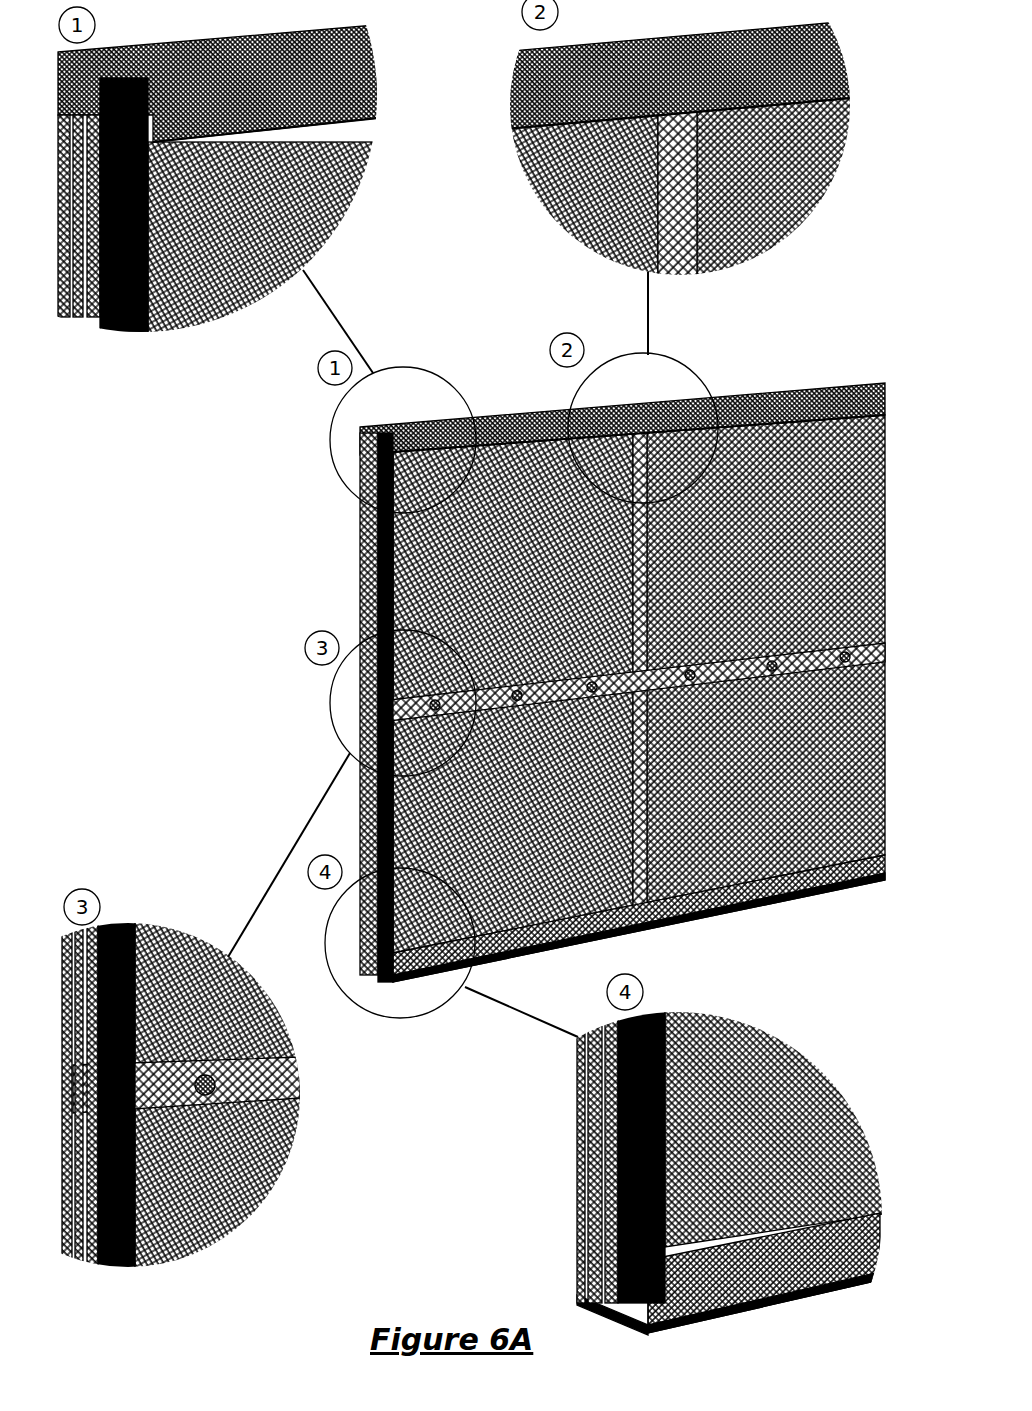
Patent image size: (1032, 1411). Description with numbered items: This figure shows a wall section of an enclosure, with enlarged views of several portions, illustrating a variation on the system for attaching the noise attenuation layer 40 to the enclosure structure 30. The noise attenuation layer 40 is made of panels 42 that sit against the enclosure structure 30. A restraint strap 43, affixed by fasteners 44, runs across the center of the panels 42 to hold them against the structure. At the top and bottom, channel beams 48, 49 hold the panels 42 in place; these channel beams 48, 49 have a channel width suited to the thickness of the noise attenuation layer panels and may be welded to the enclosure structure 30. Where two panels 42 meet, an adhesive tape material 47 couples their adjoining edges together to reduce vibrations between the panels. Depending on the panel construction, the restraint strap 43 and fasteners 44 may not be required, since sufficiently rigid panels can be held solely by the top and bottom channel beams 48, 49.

The enclosure structure 30 is at (360, 560).
The noise attenuation layer 40 is at (385, 608).
The panels 42 is at (172, 313).
The restraint strap 43 is at (287, 1072).
The fasteners 44 is at (210, 1095).
The adhesive tape material 47 is at (640, 897).
The top channel beam 48 is at (788, 405).
The bottom channel beam 49 is at (752, 897).